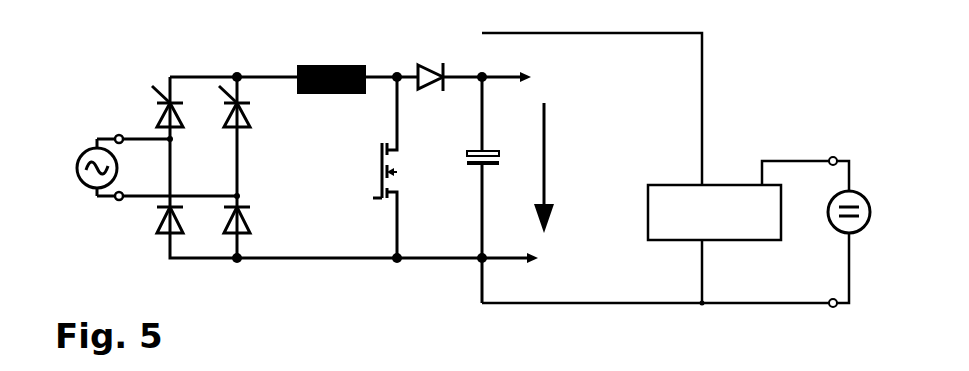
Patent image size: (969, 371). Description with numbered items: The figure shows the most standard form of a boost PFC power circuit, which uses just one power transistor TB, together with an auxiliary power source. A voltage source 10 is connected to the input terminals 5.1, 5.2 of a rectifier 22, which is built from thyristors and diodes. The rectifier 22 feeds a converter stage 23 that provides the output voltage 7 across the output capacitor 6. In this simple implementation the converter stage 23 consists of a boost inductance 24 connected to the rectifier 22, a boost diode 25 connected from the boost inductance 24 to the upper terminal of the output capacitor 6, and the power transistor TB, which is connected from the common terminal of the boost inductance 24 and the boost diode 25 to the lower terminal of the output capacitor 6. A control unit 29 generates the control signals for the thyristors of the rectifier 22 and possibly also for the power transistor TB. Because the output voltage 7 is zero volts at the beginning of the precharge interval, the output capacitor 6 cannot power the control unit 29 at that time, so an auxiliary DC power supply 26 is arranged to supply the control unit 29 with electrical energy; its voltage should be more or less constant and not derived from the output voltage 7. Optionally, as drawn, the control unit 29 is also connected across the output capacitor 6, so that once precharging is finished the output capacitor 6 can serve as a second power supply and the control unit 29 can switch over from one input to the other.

The rectifier 22 is at (184, 62).
The converter stage 23 is at (291, 58).
The boost inductance 24 is at (345, 64).
The boost diode 25 is at (430, 62).
The power transistor TB is at (375, 178).
The output capacitor 6 is at (490, 150).
The output voltage 7 is at (544, 150).
The control unit 29 is at (657, 169).
The auxiliary DC power supply 26 is at (858, 188).
The voltage source 10 is at (80, 157).
The input terminal 5.1 is at (114, 135).
The input terminal 5.2 is at (113, 200).